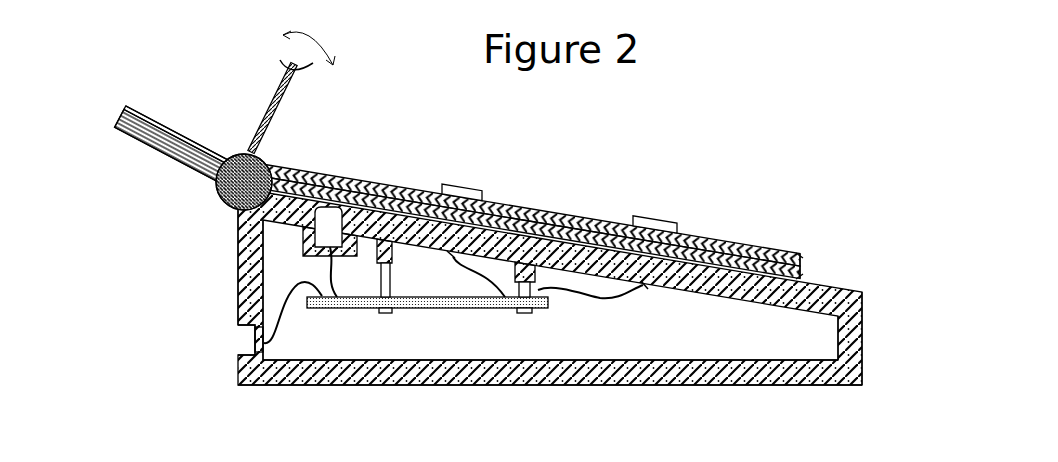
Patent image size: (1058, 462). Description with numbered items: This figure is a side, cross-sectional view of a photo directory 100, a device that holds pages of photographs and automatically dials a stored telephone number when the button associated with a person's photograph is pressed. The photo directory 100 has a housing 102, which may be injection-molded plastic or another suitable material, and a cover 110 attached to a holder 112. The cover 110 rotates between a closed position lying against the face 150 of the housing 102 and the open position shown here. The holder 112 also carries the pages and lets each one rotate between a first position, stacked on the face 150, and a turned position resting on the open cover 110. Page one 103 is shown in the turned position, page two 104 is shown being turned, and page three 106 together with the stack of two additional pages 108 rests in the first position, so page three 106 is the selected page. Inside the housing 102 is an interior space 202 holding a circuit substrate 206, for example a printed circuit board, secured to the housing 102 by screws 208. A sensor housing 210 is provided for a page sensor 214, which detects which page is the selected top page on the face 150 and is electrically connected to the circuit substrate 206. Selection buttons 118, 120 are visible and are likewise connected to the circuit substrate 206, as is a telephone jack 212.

The photo directory 100 is at (641, 149).
The housing 102 is at (478, 386).
The page one 103 is at (158, 117).
The page two 104 is at (283, 85).
The page three 106 is at (756, 238).
The stack of two additional pages 108 is at (816, 269).
The cover 110 is at (138, 152).
The holder 112 is at (268, 156).
The selection button 118 is at (470, 186).
The selection button 120 is at (669, 217).
The face 150 is at (866, 290).
The interior space 202 is at (766, 335).
The circuit substrate 206 is at (434, 309).
The screws 208 is at (381, 312).
The sensor housing 210 is at (286, 246).
The telephone jack 212 is at (240, 340).
The page sensor 214 is at (333, 206).